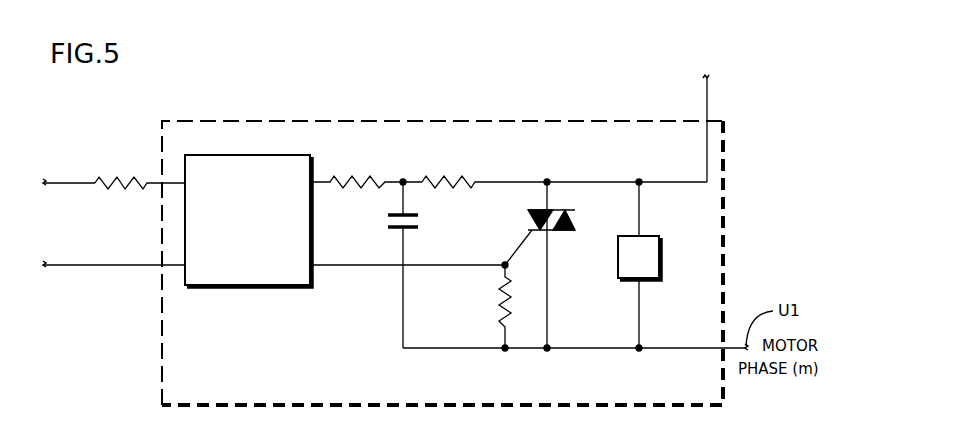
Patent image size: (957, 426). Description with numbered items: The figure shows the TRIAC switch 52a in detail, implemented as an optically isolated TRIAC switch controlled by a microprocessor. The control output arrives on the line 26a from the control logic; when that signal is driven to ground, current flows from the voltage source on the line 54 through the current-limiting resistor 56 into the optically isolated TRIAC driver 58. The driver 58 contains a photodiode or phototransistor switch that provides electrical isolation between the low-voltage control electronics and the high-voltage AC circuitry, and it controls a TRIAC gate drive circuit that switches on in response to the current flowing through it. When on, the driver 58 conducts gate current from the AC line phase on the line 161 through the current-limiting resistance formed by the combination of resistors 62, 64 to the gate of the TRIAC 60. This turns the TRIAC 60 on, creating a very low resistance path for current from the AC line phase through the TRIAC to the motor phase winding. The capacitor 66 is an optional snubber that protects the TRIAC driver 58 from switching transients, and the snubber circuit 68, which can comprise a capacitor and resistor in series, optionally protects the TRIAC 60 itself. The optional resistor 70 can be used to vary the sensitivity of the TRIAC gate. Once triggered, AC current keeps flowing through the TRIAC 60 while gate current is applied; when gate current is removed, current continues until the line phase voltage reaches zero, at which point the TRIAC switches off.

The TRIAC switch 52a is at (293, 121).
The optically isolated TRIAC driver 58 is at (213, 155).
The line 54 is at (83, 185).
The current-limiting resistor 56 is at (127, 192).
The line 26a is at (80, 267).
The resistor 62 is at (368, 177).
The resistor 64 is at (458, 177).
The capacitor 66 is at (424, 228).
The TRIAC 60 is at (560, 239).
The resistor 70 is at (500, 308).
The snubber circuit 68 is at (648, 235).
The line 161 is at (709, 98).